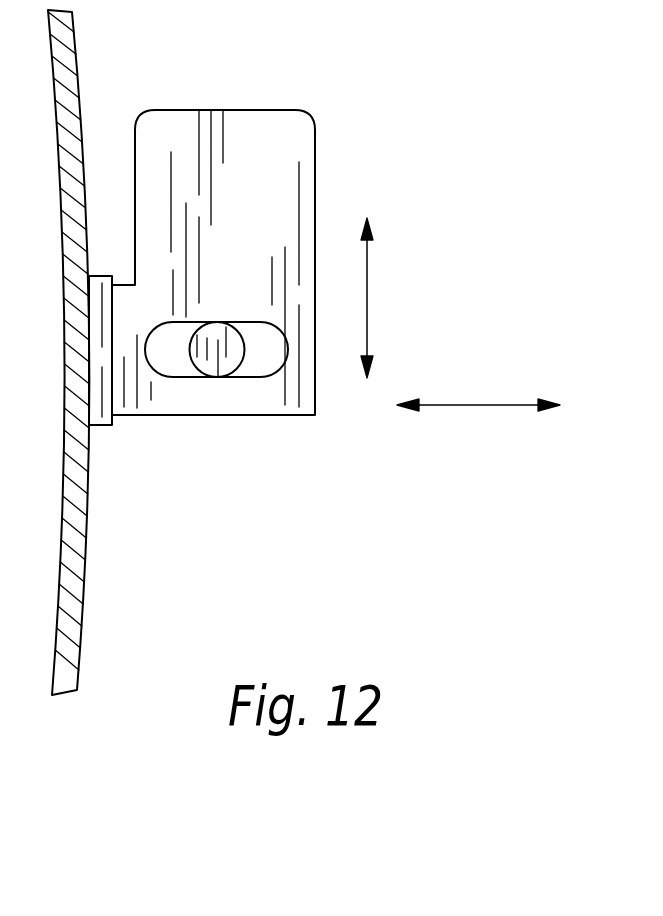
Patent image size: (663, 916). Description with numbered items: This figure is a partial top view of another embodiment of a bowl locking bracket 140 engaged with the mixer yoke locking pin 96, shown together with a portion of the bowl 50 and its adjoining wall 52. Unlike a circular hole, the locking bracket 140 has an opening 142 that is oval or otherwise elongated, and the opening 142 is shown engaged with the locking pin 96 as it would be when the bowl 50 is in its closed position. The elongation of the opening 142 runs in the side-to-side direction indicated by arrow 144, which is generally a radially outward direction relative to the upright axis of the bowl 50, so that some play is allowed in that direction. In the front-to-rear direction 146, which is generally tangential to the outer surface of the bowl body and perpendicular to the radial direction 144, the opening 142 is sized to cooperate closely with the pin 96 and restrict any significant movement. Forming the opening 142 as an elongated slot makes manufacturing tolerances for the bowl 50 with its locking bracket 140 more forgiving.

The bowl 50 is at (84, 638).
The plate 52 is at (78, 45).
The locking pin 96 is at (217, 347).
The bowl locking bracket 140 is at (252, 160).
The opening 142 is at (148, 347).
The arrow (side-to-side direction) 144 is at (478, 405).
The front-to-rear direction 146 is at (367, 294).